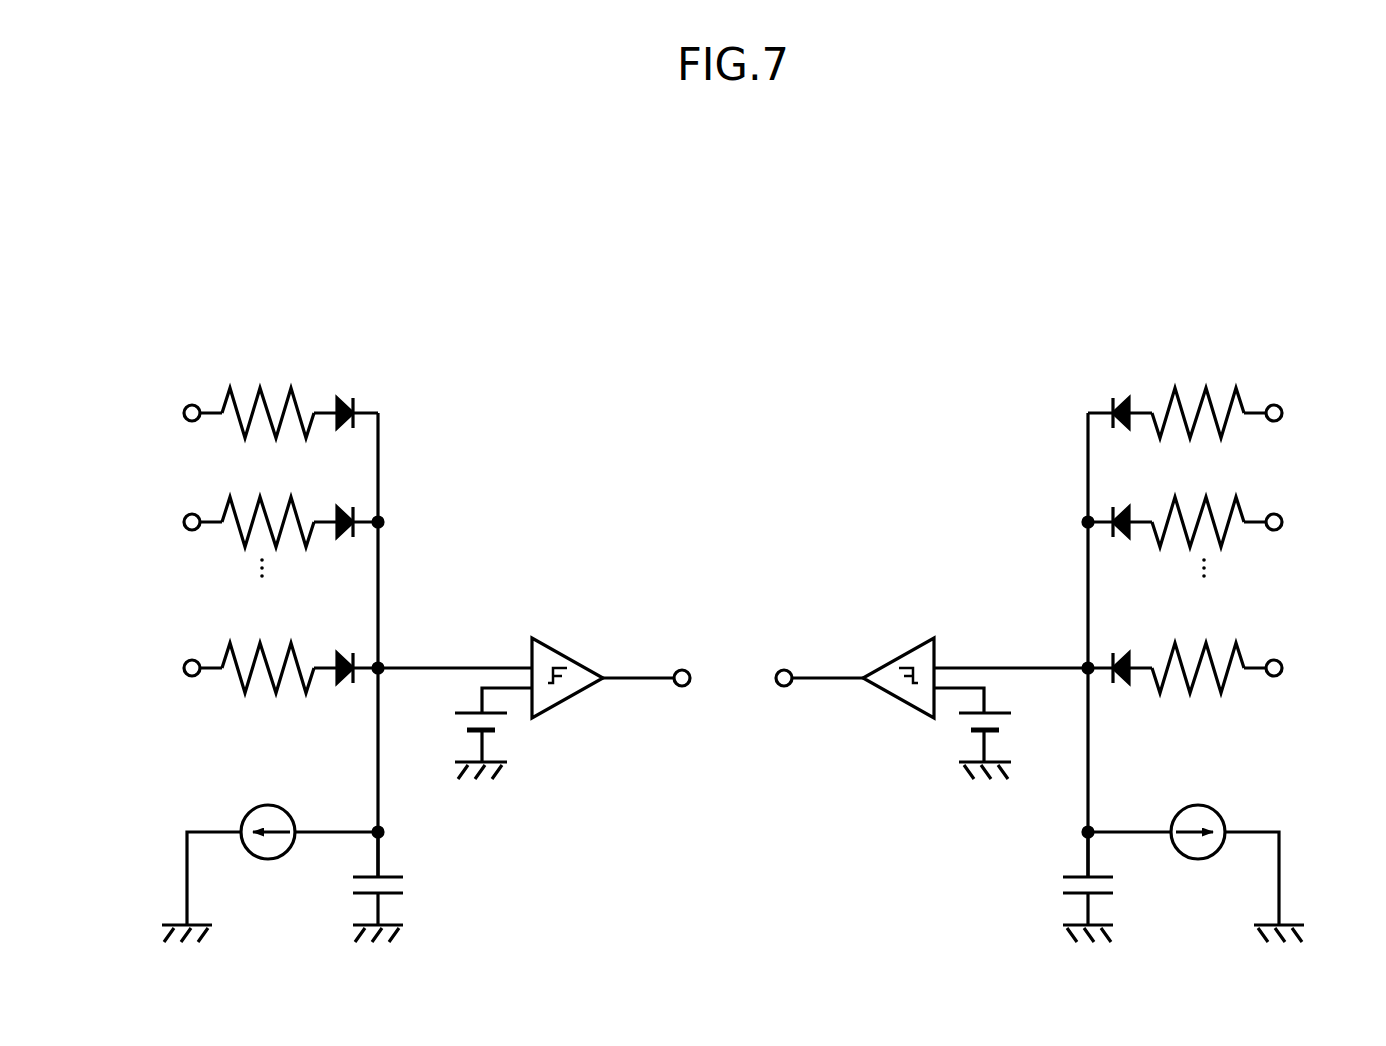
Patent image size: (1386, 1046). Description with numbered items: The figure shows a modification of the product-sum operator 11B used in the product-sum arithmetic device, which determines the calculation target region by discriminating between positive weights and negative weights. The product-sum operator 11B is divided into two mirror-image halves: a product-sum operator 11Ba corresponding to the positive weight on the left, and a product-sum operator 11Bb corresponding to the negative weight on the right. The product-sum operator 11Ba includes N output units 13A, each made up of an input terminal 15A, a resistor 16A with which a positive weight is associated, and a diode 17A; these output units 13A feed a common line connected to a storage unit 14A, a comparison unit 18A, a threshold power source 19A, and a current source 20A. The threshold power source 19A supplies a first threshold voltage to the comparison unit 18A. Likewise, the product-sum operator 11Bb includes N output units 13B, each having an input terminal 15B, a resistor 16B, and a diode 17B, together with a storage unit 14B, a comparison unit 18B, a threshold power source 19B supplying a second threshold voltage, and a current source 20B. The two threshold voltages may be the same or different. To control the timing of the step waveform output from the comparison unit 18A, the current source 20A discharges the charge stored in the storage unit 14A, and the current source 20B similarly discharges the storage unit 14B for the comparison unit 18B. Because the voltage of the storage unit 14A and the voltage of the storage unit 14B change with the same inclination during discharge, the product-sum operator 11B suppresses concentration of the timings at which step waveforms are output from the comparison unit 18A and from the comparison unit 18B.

The product-sum operator 11B is at (734, 162).
The product-sum operator 11Ba is at (228, 278).
The product-sum operator 11Bb is at (1256, 280).
The output unit 13A is at (162, 412).
The output unit 13B is at (1304, 412).
The storage unit 14A is at (405, 909).
The storage unit 14B is at (1061, 909).
The input terminal 15A is at (192, 404).
The input terminal 15B is at (1275, 404).
The resistor 16A is at (260, 387).
The resistor 16B is at (1207, 387).
The diode 17A is at (346, 397).
The diode 17B is at (1124, 397).
The comparison unit 18A is at (582, 708).
The comparison unit 18B is at (884, 708).
The threshold power source 19A is at (496, 747).
The threshold power source 19B is at (970, 747).
The current source 20A is at (268, 804).
The current source 20B is at (1198, 804).